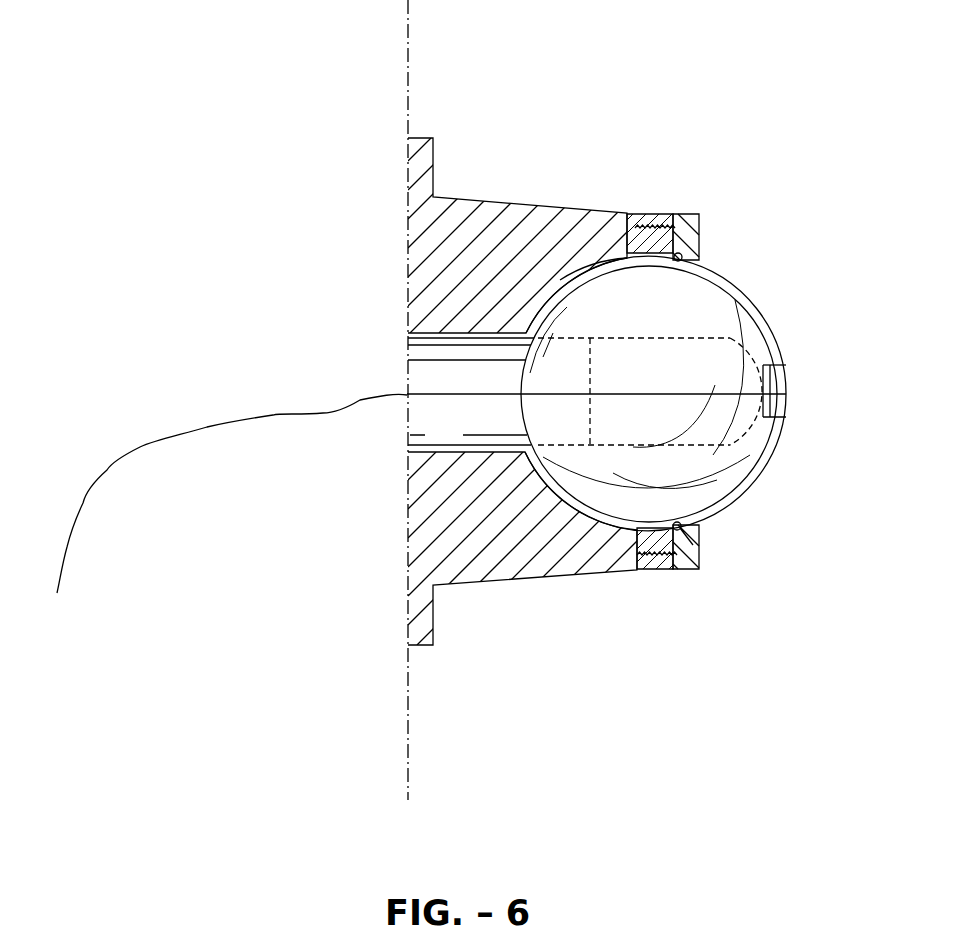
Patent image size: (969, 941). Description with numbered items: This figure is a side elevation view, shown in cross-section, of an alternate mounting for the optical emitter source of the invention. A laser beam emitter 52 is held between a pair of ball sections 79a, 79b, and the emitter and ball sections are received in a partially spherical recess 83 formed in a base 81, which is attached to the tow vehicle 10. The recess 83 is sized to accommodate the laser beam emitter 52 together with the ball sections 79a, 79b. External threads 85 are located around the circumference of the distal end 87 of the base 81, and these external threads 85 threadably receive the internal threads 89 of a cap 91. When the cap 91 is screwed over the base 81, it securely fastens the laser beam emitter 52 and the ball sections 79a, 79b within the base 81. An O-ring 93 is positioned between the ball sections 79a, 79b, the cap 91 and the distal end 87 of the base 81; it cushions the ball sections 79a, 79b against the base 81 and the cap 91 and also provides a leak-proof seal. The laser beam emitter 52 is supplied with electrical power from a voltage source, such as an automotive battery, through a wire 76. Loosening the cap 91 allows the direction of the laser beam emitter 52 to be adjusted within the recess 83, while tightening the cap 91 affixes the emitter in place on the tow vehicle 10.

The tow vehicle 10 is at (407, 45).
The laser beam emitter 52 is at (770, 313).
The wire 76 is at (360, 400).
The ball section 79a is at (752, 308).
The ball section 79b is at (762, 462).
The base 81 is at (522, 200).
The partially spherical recess 83 is at (630, 258).
The external threads 85 is at (660, 228).
The distal end 87 is at (605, 557).
The internal threads 89 is at (652, 560).
The cap 91 is at (690, 213).
The O-ring 93 is at (683, 254).